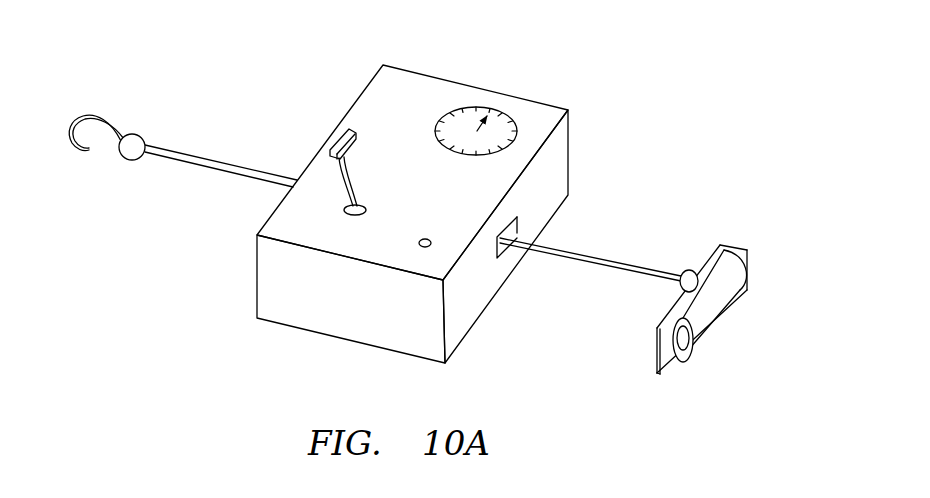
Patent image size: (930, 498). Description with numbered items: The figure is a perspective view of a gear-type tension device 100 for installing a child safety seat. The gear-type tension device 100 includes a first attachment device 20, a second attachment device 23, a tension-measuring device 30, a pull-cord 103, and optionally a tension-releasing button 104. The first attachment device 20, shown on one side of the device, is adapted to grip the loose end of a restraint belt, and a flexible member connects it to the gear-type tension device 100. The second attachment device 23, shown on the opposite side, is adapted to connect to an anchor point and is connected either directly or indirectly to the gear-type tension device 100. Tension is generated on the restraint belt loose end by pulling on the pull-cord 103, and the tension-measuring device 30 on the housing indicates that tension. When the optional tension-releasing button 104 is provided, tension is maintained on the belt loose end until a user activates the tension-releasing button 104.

The gear-type tension device 100 is at (526, 52).
The tension-measuring device 30 is at (462, 118).
The pull-cord 103 is at (345, 131).
The tension-releasing button 104 is at (423, 238).
The second attachment device 23 is at (124, 106).
The first attachment device 20 is at (718, 226).